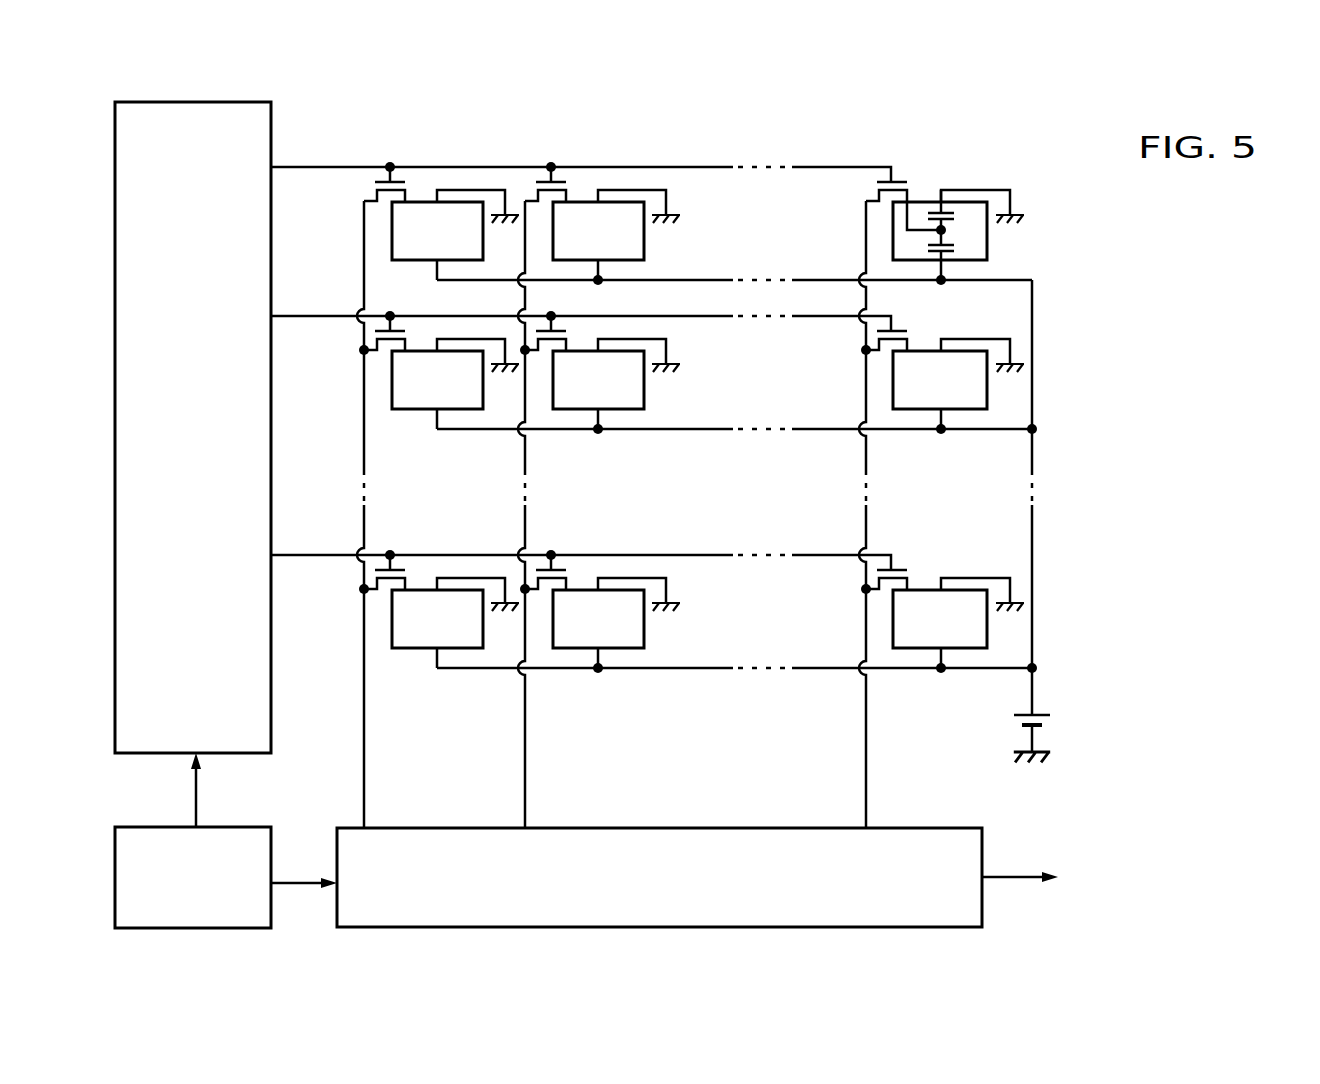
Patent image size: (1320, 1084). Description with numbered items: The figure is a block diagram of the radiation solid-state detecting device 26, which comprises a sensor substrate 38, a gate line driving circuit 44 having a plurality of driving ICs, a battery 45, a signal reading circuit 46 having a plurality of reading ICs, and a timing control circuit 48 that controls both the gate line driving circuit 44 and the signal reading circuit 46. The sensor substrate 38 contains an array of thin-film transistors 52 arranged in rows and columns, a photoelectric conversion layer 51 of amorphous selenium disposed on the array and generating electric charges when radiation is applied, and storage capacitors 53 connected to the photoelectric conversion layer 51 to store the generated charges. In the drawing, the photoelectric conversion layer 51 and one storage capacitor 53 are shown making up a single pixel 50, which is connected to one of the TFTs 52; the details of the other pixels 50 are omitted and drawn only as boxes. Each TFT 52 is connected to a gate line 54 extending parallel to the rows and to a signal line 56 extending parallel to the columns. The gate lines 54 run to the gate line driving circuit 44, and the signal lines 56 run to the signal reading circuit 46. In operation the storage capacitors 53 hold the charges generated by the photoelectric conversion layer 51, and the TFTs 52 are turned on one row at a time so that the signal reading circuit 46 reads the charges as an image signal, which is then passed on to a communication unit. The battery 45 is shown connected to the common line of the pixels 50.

The radiation solid-state detecting device 26 is at (1148, 386).
The sensor substrate 38 is at (894, 123).
The gate line driving circuit 44 is at (241, 100).
The battery 45 is at (1043, 710).
The signal reading circuit 46 is at (952, 826).
The timing control circuit 48 is at (241, 826).
The pixel 50 is at (646, 246).
The photoelectric conversion layer 51 is at (955, 247).
The thin-film transistor 52 is at (877, 185).
The storage capacitor 53 is at (955, 217).
The gate line 54 is at (829, 166).
The signal line 56 is at (866, 233).